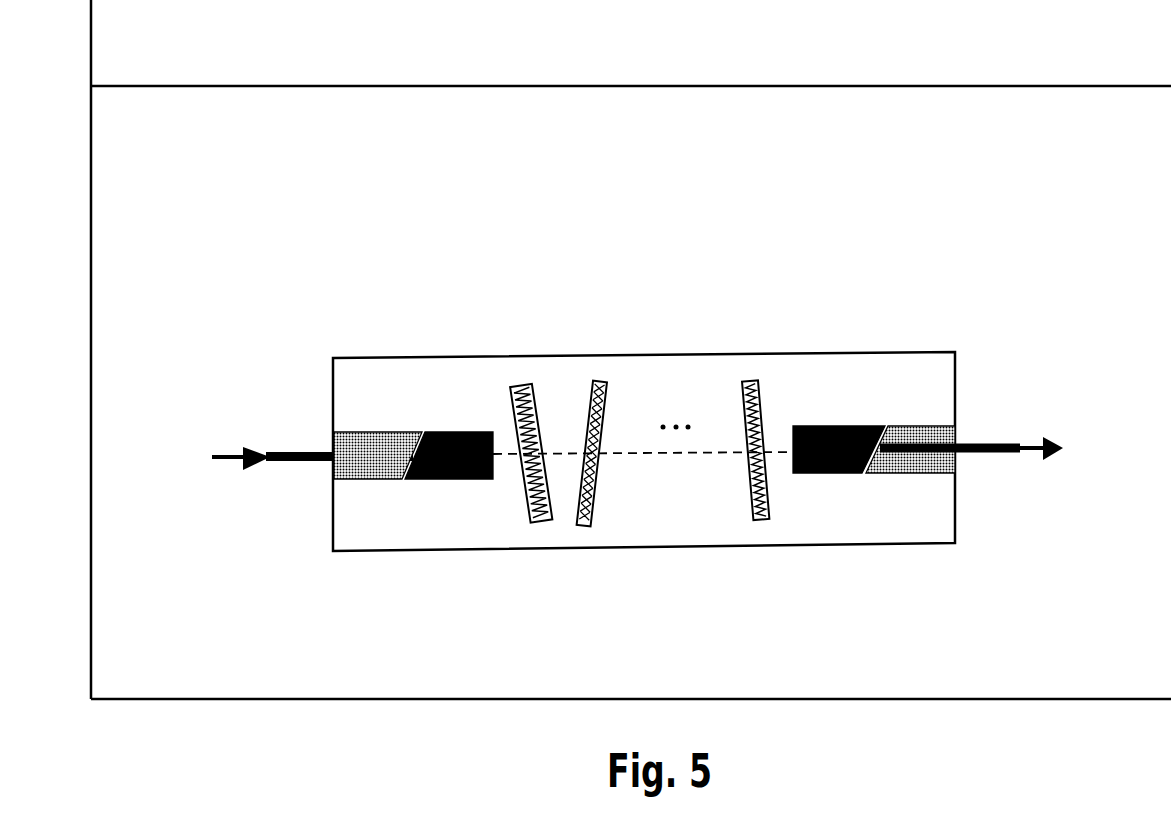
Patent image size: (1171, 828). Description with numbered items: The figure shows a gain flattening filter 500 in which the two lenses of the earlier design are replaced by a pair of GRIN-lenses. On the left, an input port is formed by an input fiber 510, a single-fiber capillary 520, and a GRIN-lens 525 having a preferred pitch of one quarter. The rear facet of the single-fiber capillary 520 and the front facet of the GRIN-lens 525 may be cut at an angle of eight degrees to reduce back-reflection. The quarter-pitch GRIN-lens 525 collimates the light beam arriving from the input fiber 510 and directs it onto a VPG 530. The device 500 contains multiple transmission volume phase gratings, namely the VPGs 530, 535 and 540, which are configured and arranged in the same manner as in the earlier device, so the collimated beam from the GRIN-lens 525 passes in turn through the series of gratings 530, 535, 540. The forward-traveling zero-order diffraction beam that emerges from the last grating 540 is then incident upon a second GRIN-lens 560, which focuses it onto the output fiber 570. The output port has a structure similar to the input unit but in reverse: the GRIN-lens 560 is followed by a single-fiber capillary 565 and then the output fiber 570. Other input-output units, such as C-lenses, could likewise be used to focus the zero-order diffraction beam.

The gain flattening filter 500 is at (676, 176).
The input fiber 510 is at (295, 452).
The single-fiber capillary 520 is at (373, 432).
The GRIN-lens 525 is at (457, 432).
The VPG 530 is at (522, 383).
The VPG 535 is at (603, 381).
The VPG 540 is at (749, 381).
The GRIN-lens 560 is at (828, 426).
The single-fiber capillary 565 is at (912, 426).
The output fiber 570 is at (983, 448).